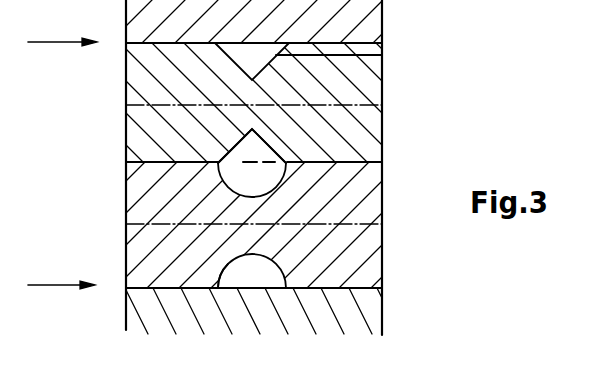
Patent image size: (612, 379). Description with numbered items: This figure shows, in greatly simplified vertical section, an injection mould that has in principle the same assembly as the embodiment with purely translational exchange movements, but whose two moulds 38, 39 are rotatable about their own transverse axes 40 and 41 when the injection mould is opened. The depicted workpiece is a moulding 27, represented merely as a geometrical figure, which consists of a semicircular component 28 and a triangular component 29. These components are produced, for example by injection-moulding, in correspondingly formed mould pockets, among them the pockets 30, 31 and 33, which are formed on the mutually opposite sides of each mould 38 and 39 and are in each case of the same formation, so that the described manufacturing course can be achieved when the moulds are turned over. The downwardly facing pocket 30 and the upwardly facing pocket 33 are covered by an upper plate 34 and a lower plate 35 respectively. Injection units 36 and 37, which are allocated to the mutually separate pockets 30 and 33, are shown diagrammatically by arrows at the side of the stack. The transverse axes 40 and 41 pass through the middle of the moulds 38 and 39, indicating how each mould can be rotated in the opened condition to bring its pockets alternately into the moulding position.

The moulding 27 is at (237, 182).
The semicircular component 28 is at (382, 54).
The triangular component 29 is at (231, 277).
The mould pocket 30 is at (275, 62).
The mould pocket 31 is at (237, 150).
The mould pocket 33 is at (220, 270).
The upper plate 34 is at (357, 17).
The lower plate 35 is at (363, 315).
The injection unit 36 is at (53, 287).
The injection unit 37 is at (57, 44).
The mould 38 is at (355, 133).
The mould 39 is at (338, 260).
The transverse axis 40 is at (382, 105).
The transverse axis 41 is at (382, 224).